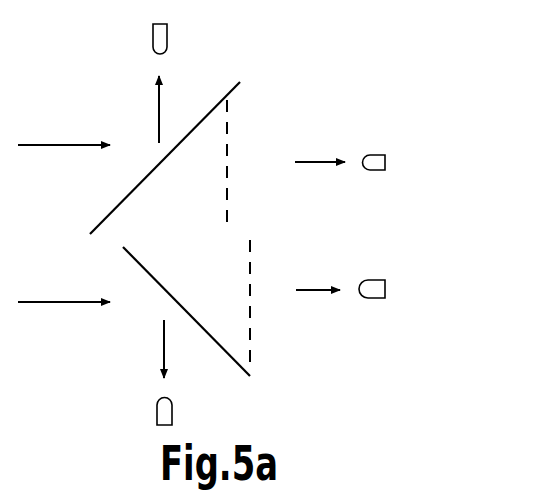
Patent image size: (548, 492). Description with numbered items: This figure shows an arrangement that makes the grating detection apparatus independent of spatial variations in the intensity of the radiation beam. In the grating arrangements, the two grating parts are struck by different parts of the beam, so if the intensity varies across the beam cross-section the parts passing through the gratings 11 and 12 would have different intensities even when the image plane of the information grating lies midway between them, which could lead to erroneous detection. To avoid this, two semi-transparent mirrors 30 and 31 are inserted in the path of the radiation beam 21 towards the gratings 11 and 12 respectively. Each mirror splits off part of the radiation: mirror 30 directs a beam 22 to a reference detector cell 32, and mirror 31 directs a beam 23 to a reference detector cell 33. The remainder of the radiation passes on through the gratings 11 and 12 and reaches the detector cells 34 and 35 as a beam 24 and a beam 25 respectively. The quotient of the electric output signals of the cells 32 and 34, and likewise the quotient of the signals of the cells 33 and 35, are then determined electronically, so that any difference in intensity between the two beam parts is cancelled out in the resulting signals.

The grating 11 is at (229, 133).
The grating 12 is at (251, 330).
The radiation beam 21 is at (40, 148).
The beam 22 is at (158, 105).
The beam 23 is at (163, 345).
The beam 24 is at (307, 164).
The beam 25 is at (315, 288).
The semi-transparent mirror 30 is at (152, 172).
The semi-transparent mirror 31 is at (150, 272).
The reference detector cell 32 is at (153, 40).
The reference detector cell 33 is at (157, 410).
The detector cell 34 is at (371, 155).
The detector cell 35 is at (372, 300).